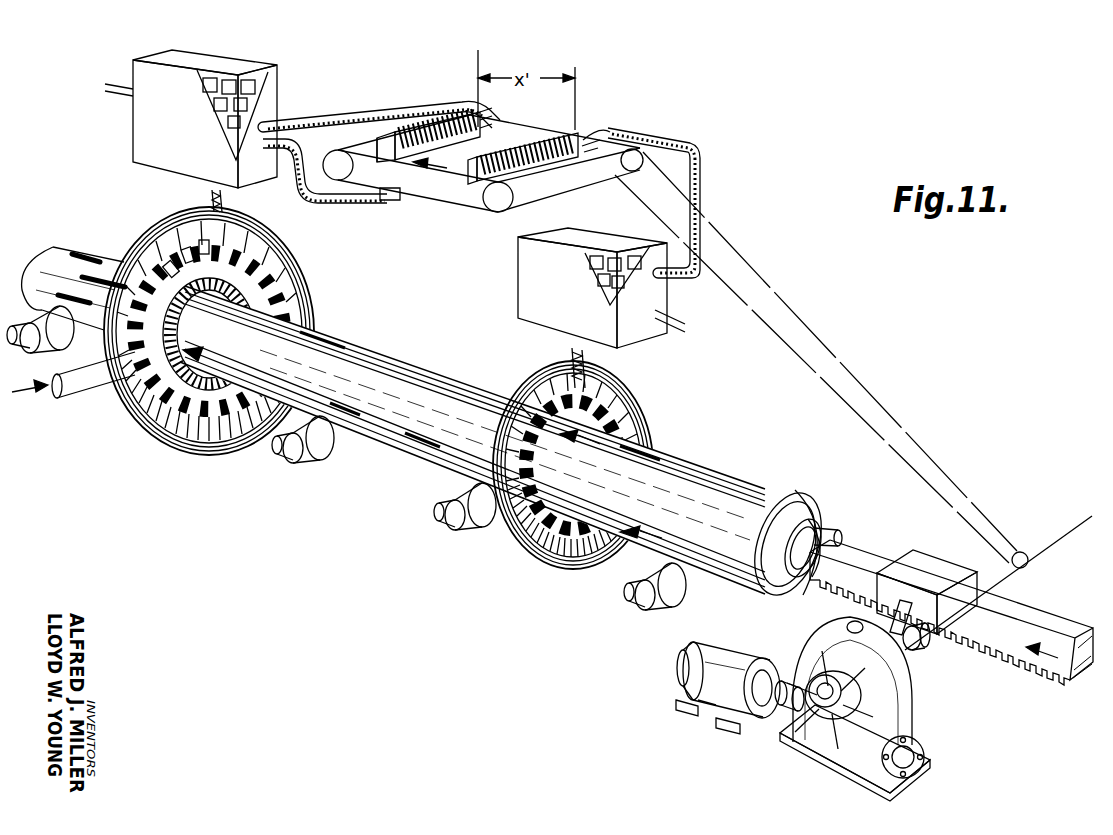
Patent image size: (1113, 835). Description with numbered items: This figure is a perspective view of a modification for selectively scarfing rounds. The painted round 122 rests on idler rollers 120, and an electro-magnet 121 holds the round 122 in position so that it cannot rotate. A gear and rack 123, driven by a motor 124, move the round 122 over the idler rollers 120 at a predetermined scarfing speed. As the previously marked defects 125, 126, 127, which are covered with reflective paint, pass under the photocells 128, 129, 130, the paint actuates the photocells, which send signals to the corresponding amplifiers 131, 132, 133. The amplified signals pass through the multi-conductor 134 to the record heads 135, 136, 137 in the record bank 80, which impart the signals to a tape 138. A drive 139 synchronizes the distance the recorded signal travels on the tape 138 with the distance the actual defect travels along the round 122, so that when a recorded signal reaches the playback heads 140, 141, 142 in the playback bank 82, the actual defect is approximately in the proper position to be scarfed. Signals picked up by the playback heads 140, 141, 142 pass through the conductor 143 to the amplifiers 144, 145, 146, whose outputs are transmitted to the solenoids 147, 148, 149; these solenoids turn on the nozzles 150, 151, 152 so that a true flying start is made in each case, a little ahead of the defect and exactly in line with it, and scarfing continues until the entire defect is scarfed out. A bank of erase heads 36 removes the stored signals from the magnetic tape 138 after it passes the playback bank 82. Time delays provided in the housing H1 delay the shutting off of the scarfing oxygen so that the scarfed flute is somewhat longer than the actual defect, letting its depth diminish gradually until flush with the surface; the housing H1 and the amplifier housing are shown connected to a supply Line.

The housing H1 is at (152, 121).
The supply line connection Line is at (629, 308).
The bank of erase heads 36 is at (405, 200).
The bank of record heads 80 is at (549, 138).
The bank of play-back heads 82 is at (411, 137).
The idler rollers 120 is at (300, 470).
The electro-magnet 121 is at (800, 527).
The round 122 is at (412, 442).
The gear and rack 123 is at (950, 630).
The motor 124 is at (726, 660).
The marked defect 125 is at (430, 372).
The marked defect 126 is at (455, 380).
The marked defect 127 is at (465, 396).
The photocell 128 is at (617, 396).
The photocell 129 is at (630, 410).
The photocell 130 is at (641, 426).
The amplifier 131 is at (632, 252).
The amplifier 132 is at (612, 252).
The amplifier 133 is at (594, 248).
The multi-conductor 134 is at (698, 180).
The record head 135 is at (612, 130).
The record head 136 is at (586, 147).
The record head 137 is at (583, 143).
The tape 138 is at (500, 140).
The drive 139 is at (805, 322).
The playback head 140 is at (490, 112).
The playback head 141 is at (483, 118).
The playback head 142 is at (478, 114).
The conductor 143 is at (325, 118).
The amplifier 144 is at (247, 84).
The amplifier 145 is at (229, 82).
The amplifier 146 is at (206, 82).
The solenoid 147 is at (204, 242).
The solenoid 148 is at (188, 256).
The solenoid 149 is at (170, 272).
The nozzle 150 is at (242, 265).
The nozzle 151 is at (250, 277).
The nozzle 152 is at (262, 292).